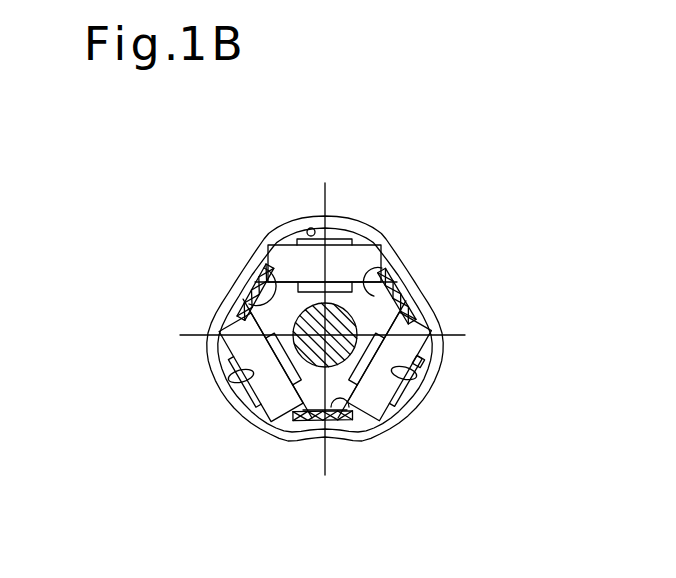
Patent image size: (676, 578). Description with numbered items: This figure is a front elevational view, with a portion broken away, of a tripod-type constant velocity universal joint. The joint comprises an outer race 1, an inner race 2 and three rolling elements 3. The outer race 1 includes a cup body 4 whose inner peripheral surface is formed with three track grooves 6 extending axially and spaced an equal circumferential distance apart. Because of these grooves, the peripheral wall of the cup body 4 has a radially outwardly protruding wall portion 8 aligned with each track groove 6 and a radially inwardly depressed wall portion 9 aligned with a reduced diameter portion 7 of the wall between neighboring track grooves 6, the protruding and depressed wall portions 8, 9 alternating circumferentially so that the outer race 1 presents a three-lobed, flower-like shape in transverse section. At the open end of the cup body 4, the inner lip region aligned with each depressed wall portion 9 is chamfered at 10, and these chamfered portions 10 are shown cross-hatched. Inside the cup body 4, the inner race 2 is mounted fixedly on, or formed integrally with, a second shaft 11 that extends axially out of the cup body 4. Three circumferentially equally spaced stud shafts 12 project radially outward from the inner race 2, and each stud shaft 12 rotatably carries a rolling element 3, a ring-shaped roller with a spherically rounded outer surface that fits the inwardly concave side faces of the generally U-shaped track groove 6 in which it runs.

The outer race 1 is at (403, 223).
The inner race 2 is at (370, 315).
The rolling element 3 is at (289, 258).
The cup body 4 is at (373, 222).
The track groove 6 is at (309, 229).
The reduced diameter portion 7 is at (264, 268).
The radially outwardly protruding wall portion 8 is at (348, 216).
The radially inwardly depressed wall portion 9 is at (224, 293).
The chamfered portion 10 is at (262, 285).
The second shaft 11 is at (302, 414).
The stud shaft 12 is at (419, 363).